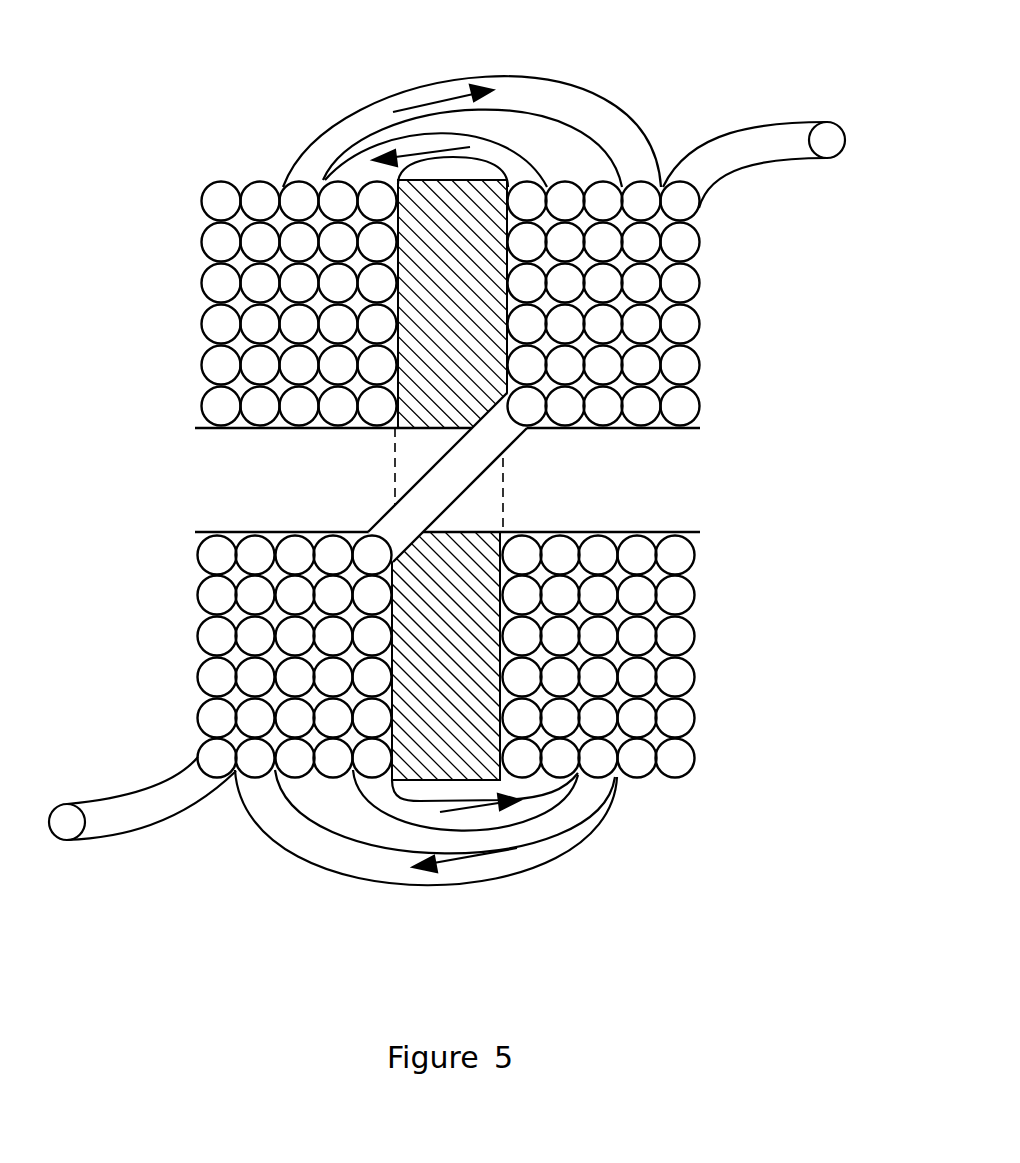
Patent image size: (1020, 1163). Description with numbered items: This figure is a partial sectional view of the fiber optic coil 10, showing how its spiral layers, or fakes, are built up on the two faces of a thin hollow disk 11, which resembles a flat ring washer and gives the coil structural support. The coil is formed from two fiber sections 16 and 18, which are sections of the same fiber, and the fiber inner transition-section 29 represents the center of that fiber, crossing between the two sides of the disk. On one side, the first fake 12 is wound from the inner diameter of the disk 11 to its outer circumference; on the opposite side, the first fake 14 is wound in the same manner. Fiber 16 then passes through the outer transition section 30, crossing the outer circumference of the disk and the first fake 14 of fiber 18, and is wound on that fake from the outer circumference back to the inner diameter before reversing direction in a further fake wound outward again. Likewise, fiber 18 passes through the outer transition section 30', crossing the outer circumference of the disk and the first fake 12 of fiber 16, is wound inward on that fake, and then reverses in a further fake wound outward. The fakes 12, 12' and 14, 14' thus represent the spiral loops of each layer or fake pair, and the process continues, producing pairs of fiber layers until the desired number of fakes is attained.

The fiber optic coil 10 is at (170, 160).
The thin hollow disk 11 is at (445, 217).
The first fake 12 is at (384, 584).
The fake 12' is at (386, 584).
The first fake 14 is at (476, 584).
The fake 14' is at (477, 584).
The fiber section 16 is at (130, 834).
The fiber section 18 is at (785, 162).
The fiber inner transition-section 29 is at (462, 504).
The outer transition section 30 is at (426, 857).
The outer transition section 30' is at (472, 115).